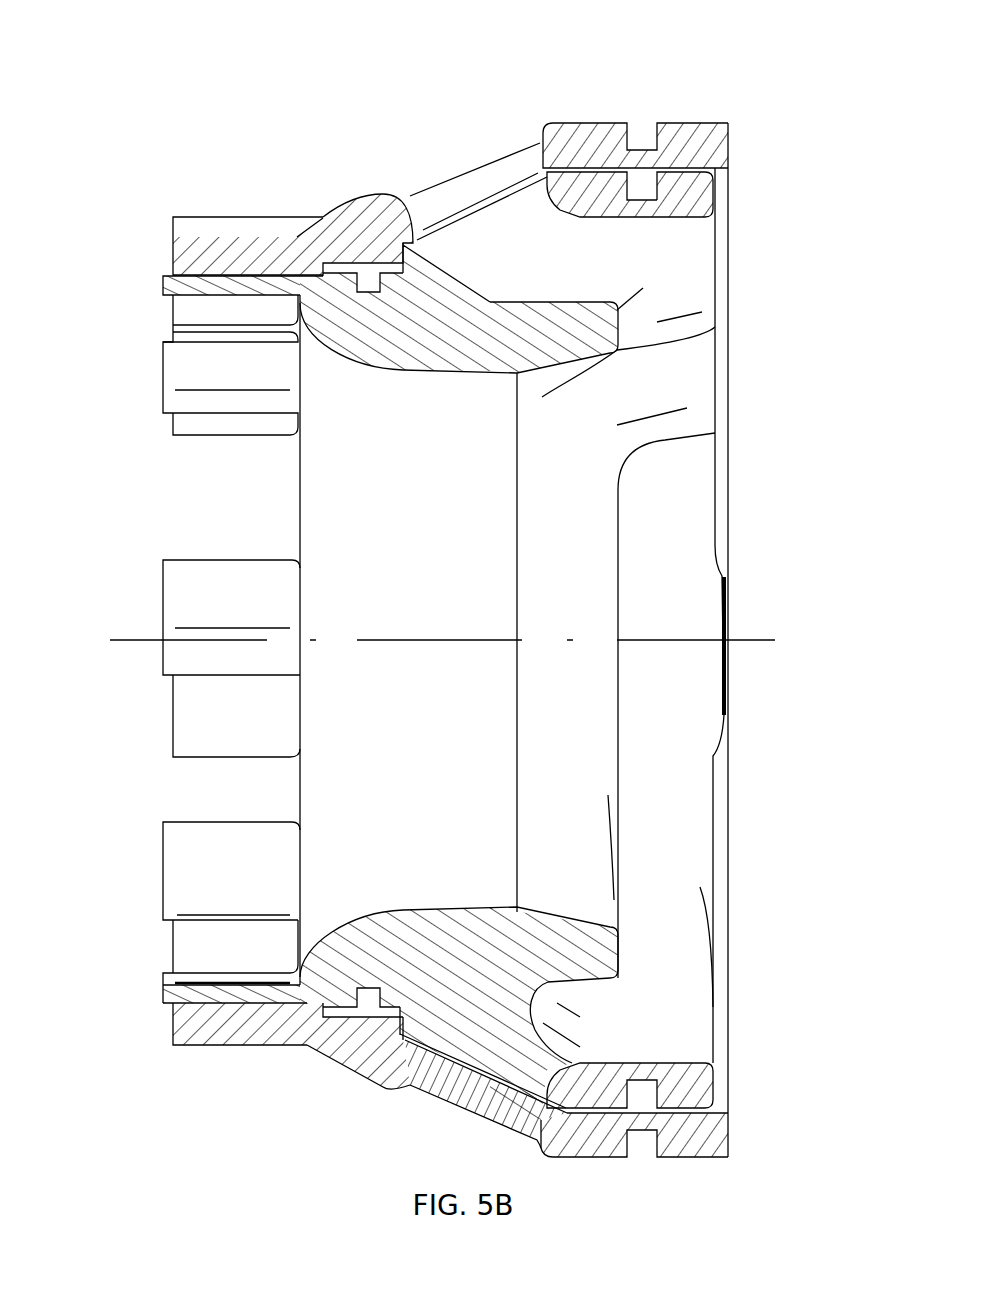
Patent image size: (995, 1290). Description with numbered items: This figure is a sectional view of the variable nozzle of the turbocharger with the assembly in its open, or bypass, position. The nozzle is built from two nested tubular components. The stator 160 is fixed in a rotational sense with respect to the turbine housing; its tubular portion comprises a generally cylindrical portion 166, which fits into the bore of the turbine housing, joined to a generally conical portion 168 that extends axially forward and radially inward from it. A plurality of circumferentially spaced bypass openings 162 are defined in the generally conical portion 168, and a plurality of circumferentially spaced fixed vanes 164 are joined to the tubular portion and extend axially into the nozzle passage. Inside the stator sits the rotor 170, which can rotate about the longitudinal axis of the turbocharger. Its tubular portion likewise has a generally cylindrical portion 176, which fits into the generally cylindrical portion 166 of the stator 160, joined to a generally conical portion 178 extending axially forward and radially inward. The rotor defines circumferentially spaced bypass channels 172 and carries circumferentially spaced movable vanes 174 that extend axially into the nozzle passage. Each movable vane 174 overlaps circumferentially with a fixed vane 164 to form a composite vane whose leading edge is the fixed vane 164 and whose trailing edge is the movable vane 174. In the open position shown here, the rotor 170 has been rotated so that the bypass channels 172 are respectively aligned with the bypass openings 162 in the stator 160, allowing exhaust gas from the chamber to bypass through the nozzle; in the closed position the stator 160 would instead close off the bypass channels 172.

The stator 160 is at (682, 126).
The bypass openings 162 is at (483, 175).
The fixed vanes 164 is at (180, 255).
The generally cylindrical portion 166 is at (600, 130).
The generally conical portion 168 is at (370, 220).
The rotor 170 is at (715, 190).
The bypass channels 172 is at (598, 268).
The movable vanes 174 is at (165, 395).
The generally cylindrical portion 176 is at (678, 200).
The generally conical portion 178 is at (430, 308).